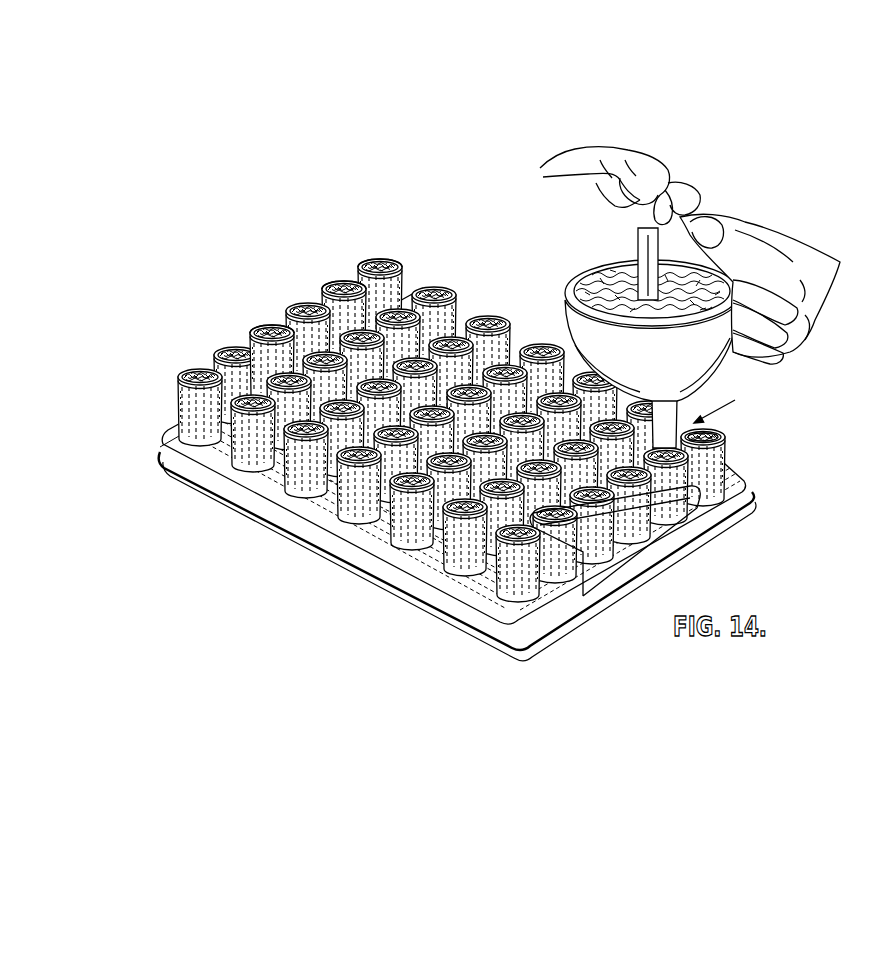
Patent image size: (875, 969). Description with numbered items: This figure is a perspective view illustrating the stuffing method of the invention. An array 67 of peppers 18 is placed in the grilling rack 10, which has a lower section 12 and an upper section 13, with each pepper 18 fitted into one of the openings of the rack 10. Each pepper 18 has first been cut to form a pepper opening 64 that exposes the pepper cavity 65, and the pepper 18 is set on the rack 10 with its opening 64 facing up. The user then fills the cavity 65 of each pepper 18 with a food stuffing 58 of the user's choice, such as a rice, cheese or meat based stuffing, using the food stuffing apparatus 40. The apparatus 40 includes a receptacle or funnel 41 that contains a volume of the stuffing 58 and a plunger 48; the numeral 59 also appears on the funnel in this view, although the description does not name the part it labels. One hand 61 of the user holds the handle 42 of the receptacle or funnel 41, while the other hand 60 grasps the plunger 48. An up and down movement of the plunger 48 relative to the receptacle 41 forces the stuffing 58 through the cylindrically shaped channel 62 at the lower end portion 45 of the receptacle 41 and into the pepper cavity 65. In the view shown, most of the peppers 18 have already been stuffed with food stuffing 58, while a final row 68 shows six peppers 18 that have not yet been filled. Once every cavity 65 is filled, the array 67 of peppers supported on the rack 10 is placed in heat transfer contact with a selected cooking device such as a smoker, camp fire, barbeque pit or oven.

The grilling rack 10 is at (108, 243).
The lower section 12 is at (250, 508).
The upper section 13 is at (240, 452).
The pepper 18 is at (197, 407).
The food stuffing apparatus 40 is at (690, 255).
The receptacle or funnel 41 is at (670, 363).
The handle 42 is at (738, 367).
The lower end portion 45 is at (663, 410).
The plunger 48 is at (636, 230).
The food stuffing 58 is at (436, 284).
The funnel rim 59 is at (633, 245).
The other hand 60 is at (567, 148).
The one hand 61 is at (797, 240).
The cylindrically shaped channel 62 is at (728, 458).
The pepper opening 64 is at (727, 404).
The pepper cavity 65 is at (709, 441).
The array of peppers 67 is at (363, 260).
The final row 68 is at (512, 585).